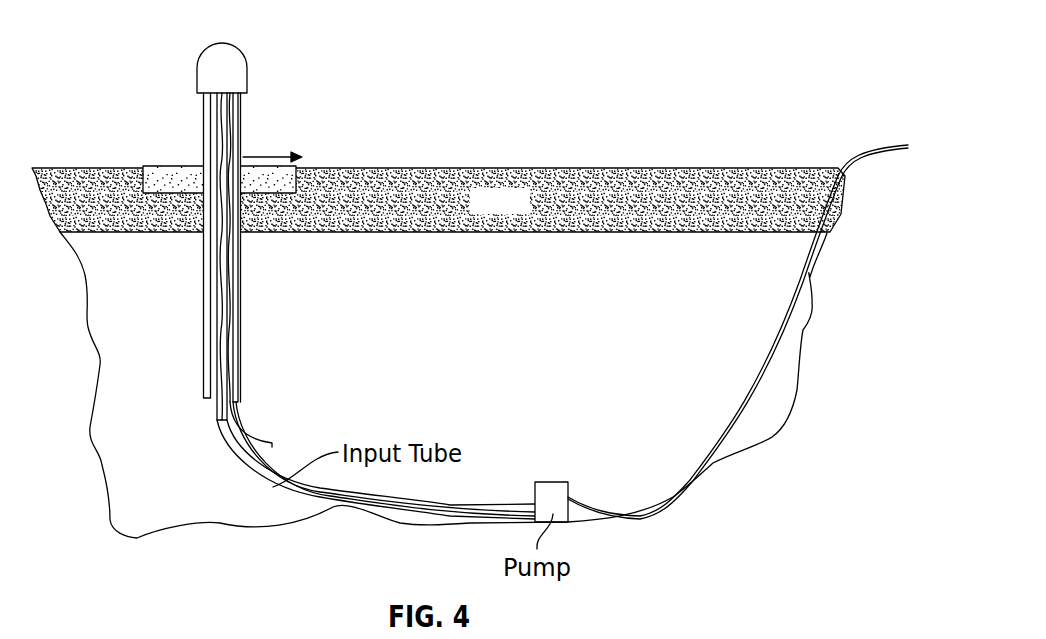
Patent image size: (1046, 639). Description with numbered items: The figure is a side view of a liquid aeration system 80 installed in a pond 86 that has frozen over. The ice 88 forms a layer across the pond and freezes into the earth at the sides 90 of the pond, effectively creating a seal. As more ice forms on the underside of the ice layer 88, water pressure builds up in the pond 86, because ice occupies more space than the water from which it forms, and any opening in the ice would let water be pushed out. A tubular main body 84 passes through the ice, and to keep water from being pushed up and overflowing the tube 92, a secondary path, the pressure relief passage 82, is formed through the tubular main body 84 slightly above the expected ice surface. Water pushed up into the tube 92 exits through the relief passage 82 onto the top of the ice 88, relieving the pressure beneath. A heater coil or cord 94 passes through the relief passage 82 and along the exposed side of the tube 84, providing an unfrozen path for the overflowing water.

The liquid aeration system 80 is at (115, 46).
The pressure relief passage 82 is at (245, 156).
The tubular main body 84 is at (203, 125).
The pond 86 is at (670, 273).
The ice 88 is at (568, 187).
The sides of the pond 90 is at (812, 303).
The tube 92 is at (215, 408).
The heater coil or cord 94 is at (233, 322).